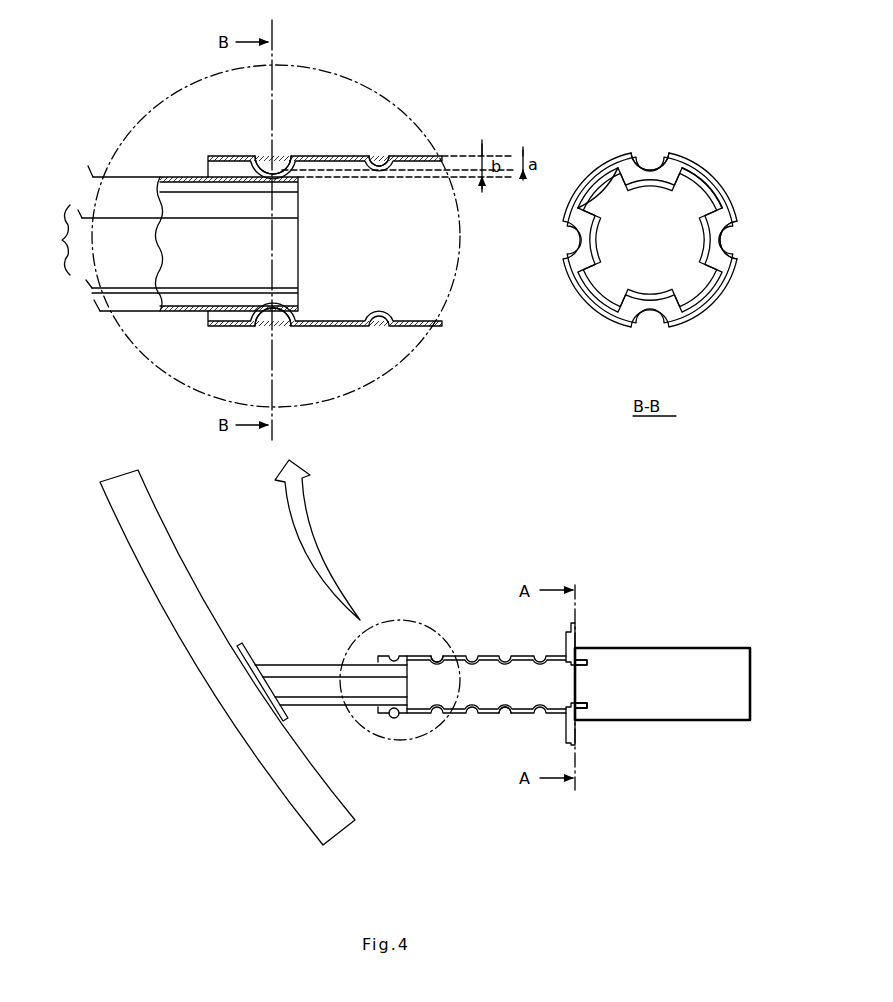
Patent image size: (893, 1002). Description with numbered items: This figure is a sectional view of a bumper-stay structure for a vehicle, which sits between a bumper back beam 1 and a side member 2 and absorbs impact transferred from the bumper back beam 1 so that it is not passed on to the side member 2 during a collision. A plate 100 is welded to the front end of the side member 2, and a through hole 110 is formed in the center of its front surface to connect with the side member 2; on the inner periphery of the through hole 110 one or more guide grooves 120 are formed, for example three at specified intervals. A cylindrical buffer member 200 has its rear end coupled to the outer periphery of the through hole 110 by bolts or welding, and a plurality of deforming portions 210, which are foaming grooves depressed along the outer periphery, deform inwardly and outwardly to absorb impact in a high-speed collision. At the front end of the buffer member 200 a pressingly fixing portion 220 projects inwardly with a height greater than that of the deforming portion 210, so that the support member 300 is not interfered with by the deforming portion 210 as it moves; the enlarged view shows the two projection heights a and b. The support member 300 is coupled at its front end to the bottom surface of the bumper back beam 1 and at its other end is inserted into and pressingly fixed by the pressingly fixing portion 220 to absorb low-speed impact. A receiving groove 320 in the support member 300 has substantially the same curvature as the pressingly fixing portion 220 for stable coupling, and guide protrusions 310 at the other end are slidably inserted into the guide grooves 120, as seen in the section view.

The bumper back beam 1 is at (212, 614).
The side member 2 is at (617, 647).
The plate 100 is at (577, 745).
The through hole 110 is at (580, 677).
The guide groove 120 is at (582, 717).
The buffer member 200 is at (412, 330).
The deforming portion 210 is at (375, 162).
The pressingly fixing portion 220 is at (268, 305).
The support member 300 is at (124, 170).
The guide protrusion 310 is at (748, 165).
The receiving groove 320 is at (268, 172).